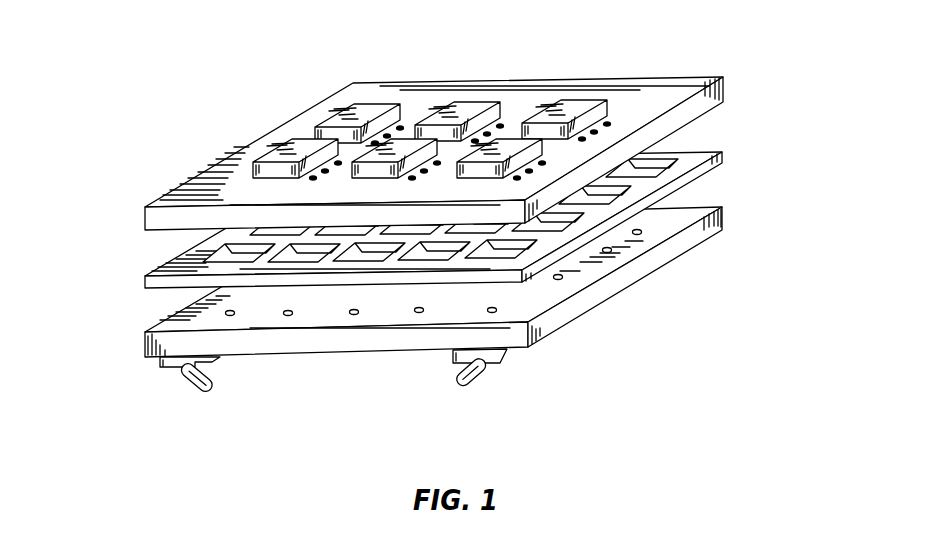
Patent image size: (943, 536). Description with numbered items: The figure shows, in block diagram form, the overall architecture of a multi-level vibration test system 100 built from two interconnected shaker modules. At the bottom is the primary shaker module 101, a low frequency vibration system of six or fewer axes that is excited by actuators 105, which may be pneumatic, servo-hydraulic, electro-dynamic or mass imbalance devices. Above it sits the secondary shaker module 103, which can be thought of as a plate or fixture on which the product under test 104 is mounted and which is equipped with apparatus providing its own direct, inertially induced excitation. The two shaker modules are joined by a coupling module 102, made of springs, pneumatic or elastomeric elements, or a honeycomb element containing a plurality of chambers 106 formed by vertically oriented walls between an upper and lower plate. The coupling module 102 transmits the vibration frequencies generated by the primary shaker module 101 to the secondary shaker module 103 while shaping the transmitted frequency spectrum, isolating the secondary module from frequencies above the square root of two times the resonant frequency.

The multi-level vibration test system 100 is at (92, 433).
The primary shaker module 101 is at (723, 208).
The coupling module 102 is at (468, 217).
The secondary shaker module 103 is at (493, 122).
The product under test 104 is at (603, 98).
The actuators 105 is at (480, 372).
The chambers 106 is at (218, 247).